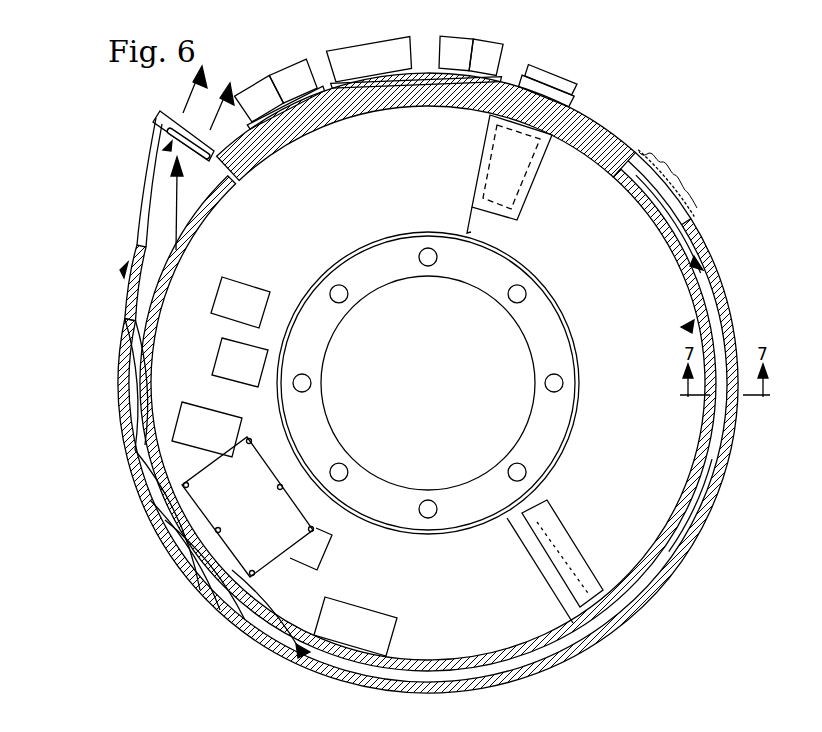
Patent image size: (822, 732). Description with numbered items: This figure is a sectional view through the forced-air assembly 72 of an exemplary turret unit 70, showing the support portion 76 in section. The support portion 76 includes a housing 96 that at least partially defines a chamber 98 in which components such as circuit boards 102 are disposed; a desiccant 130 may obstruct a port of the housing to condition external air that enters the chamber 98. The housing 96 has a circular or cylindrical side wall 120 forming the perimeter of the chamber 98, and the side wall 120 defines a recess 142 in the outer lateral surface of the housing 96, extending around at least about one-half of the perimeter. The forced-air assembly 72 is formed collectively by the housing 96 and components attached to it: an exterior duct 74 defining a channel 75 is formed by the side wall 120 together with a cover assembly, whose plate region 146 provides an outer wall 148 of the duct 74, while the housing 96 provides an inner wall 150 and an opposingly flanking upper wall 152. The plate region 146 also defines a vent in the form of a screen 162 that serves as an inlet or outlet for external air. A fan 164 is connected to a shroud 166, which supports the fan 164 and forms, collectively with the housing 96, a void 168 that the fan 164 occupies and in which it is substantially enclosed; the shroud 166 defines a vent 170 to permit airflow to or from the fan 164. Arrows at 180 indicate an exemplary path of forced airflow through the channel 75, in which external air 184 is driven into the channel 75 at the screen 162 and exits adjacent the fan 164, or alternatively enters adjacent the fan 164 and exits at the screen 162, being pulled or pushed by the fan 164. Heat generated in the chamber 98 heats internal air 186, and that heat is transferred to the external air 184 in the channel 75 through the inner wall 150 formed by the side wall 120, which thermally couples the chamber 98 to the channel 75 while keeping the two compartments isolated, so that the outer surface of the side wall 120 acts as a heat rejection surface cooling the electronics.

The turret unit 70 is at (56, 257).
The forced-air assembly 72 is at (135, 282).
The exterior duct 74 is at (122, 401).
The channel 75 is at (135, 408).
The support portion 76 is at (92, 302).
The housing 96 is at (583, 100).
The chamber 98 is at (160, 441).
The circuit boards 102 is at (480, 232).
The side wall 120 is at (160, 342).
The desiccant 130 is at (528, 190).
The recess 142 is at (138, 372).
The plate region 146 is at (147, 505).
The outer wall 148 is at (178, 562).
The inner wall 150 is at (219, 585).
The upper wall 152 is at (250, 612).
The screen 162 is at (684, 198).
The fan 164 is at (150, 132).
The shroud 166 is at (165, 136).
The void 168 is at (166, 148).
The vent 170 is at (176, 115).
The forced airflow path 180 is at (176, 180).
The external air 184 is at (686, 133).
The internal air 186 is at (632, 293).